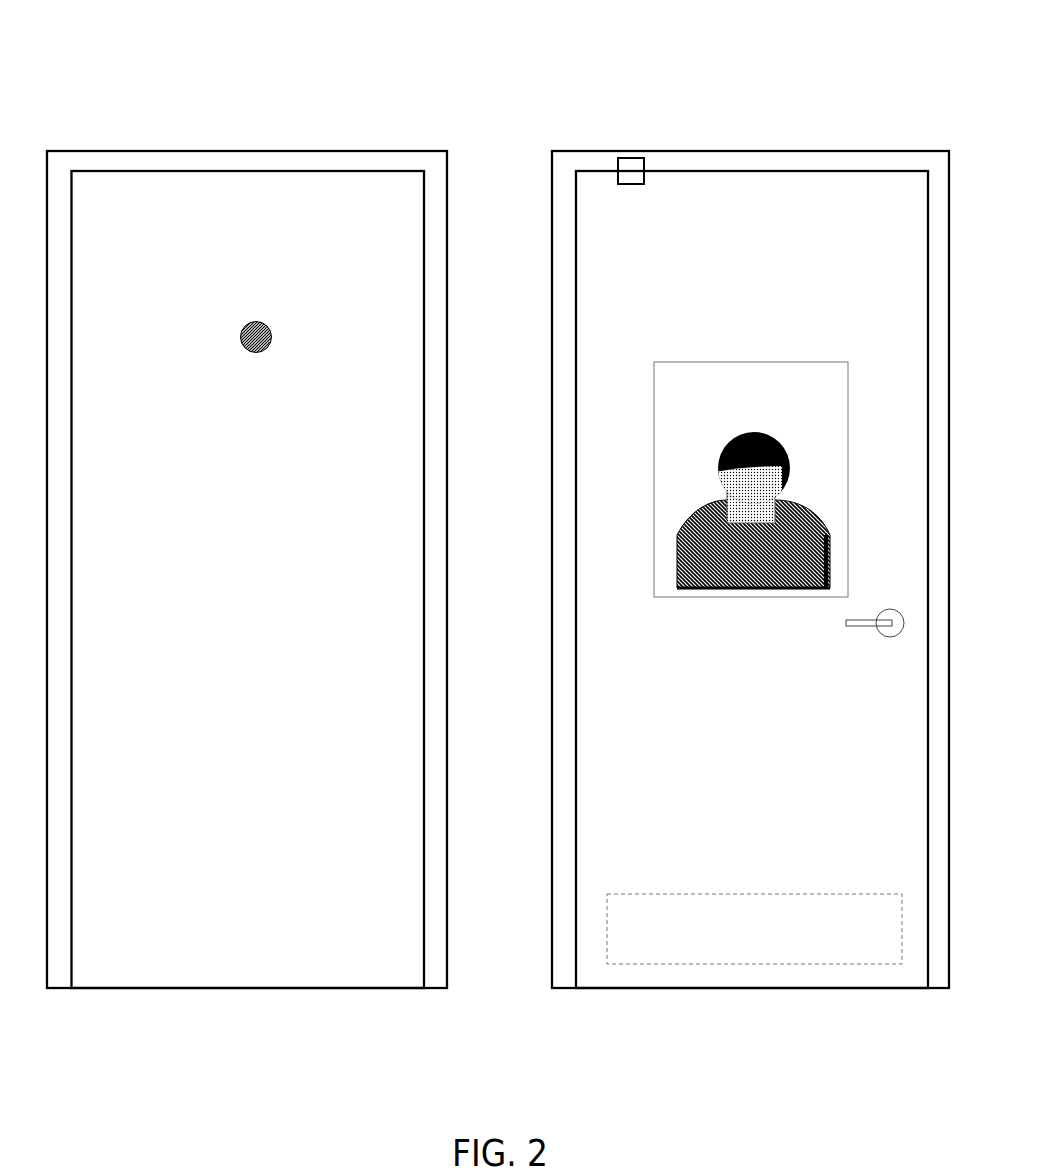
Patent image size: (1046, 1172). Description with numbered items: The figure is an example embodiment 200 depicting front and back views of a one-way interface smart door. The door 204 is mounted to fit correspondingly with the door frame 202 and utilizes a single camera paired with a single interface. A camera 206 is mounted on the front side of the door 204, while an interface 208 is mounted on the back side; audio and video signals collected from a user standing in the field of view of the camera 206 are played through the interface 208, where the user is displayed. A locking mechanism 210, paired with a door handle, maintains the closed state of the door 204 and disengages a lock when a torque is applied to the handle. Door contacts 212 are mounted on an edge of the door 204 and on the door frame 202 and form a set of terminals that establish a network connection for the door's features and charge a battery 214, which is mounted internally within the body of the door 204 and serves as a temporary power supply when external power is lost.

The example embodiment 200 is at (512, 86).
The door frame 202 is at (250, 151).
The door 204 is at (183, 287).
The camera 206 is at (263, 353).
The interface 208 is at (750, 598).
The locking mechanism 210 is at (893, 637).
The door contacts 212 is at (632, 190).
The battery 214 is at (722, 894).